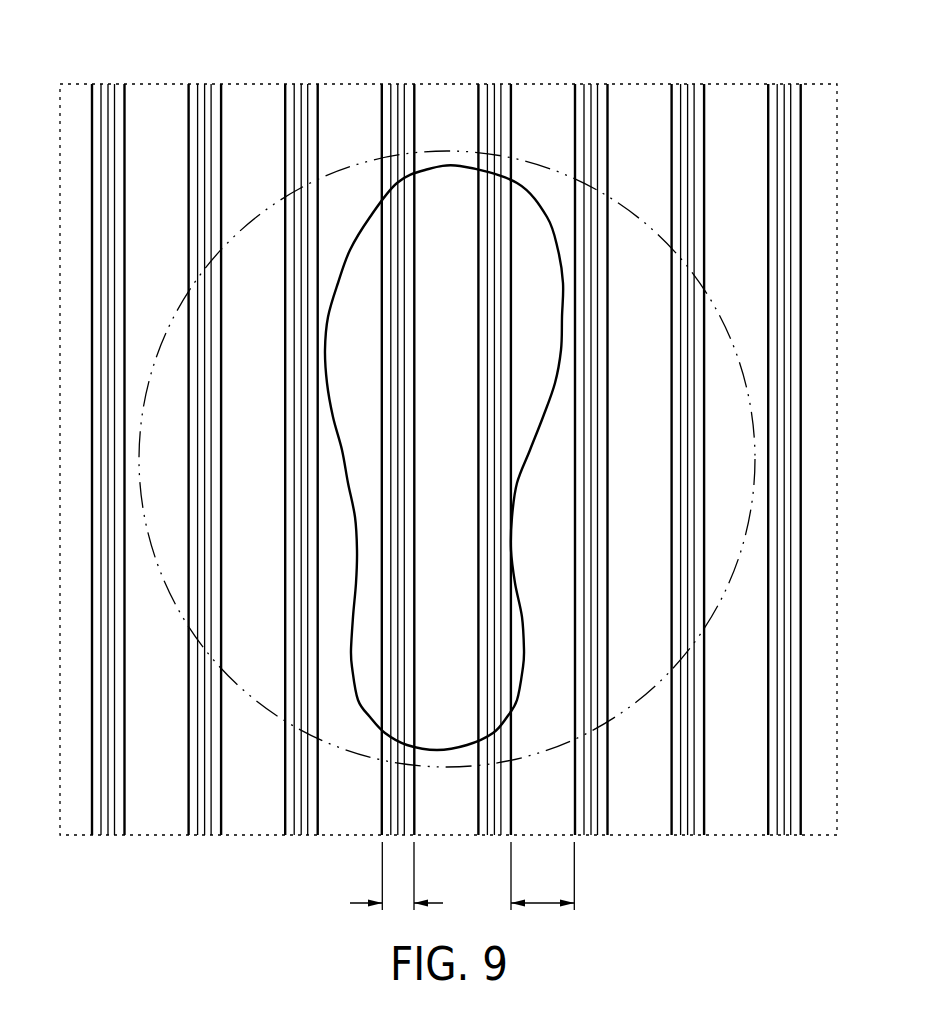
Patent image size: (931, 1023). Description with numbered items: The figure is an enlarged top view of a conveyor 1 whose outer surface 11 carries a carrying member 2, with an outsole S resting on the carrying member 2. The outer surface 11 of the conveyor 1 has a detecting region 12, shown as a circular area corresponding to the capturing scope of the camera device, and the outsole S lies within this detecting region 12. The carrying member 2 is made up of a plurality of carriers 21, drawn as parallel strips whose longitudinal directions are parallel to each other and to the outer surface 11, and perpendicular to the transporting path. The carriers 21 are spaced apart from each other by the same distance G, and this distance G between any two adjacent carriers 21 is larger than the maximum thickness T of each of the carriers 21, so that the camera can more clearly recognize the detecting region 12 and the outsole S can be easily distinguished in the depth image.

The conveyor 1 is at (643, 95).
The carrying member 2 is at (505, 113).
The outer surface 11 is at (348, 107).
The detecting region 12 is at (440, 151).
The carriers 21 is at (290, 120).
The outsole S is at (352, 273).
The maximum thickness T is at (396, 876).
The distance G is at (542, 876).